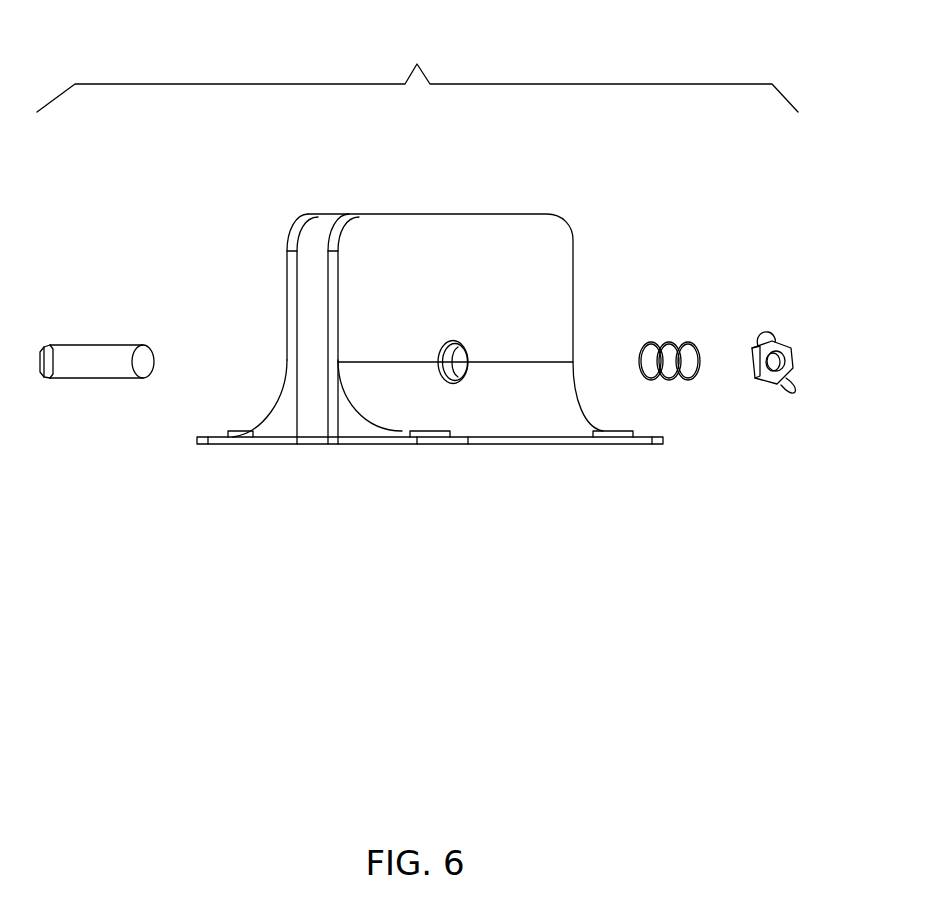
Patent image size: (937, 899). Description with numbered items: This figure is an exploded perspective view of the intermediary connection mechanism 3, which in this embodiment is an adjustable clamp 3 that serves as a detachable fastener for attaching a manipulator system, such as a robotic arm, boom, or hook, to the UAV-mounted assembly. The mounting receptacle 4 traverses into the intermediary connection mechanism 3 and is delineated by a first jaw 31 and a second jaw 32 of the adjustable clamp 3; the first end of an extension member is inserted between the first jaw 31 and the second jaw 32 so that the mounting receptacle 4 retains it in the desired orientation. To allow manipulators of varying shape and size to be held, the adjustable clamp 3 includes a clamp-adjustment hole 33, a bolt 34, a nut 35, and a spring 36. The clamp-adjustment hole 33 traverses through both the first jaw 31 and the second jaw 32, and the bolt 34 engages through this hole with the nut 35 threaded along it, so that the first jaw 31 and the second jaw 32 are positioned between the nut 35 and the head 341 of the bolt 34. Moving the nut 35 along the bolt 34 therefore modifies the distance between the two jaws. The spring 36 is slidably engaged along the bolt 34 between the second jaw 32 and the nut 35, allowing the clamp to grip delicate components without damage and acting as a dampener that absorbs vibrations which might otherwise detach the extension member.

The intermediary connection mechanism 3 is at (417, 65).
The mounting receptacle 4 is at (314, 391).
The first jaw 31 is at (290, 266).
The second jaw 32 is at (558, 237).
The clamp-adjustment hole 33 is at (446, 362).
The bolt 34 is at (143, 355).
The head 341 is at (42, 380).
The nut 35 is at (753, 363).
The spring 36 is at (692, 343).